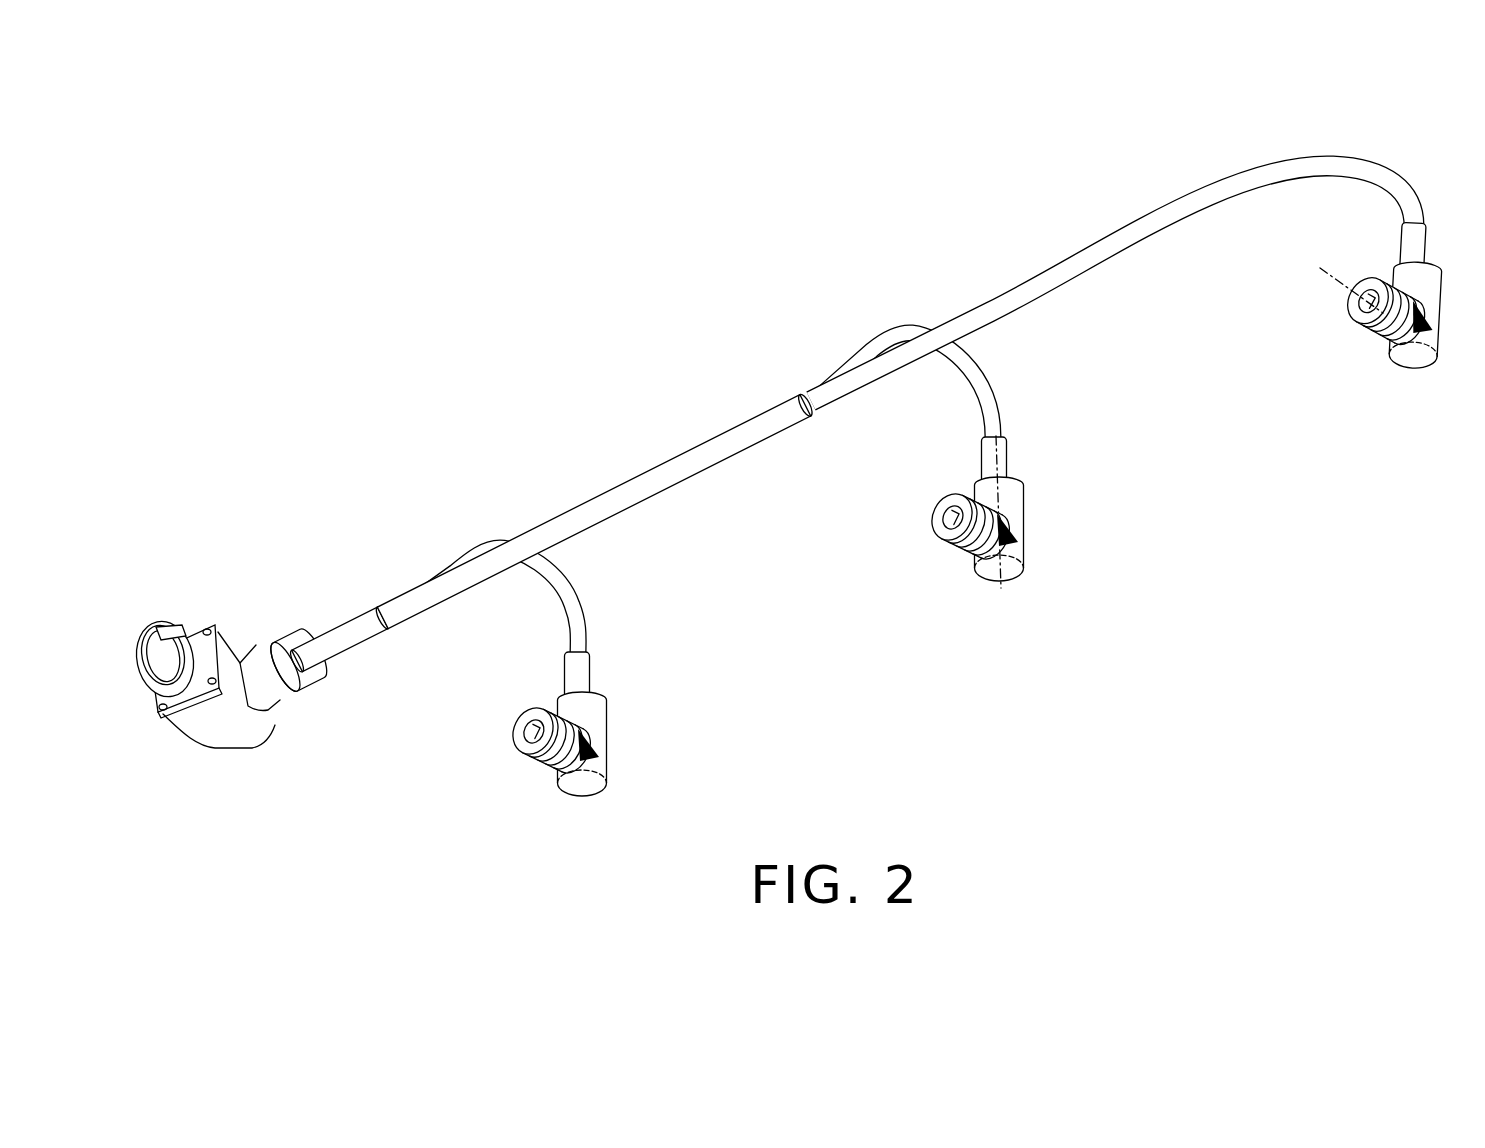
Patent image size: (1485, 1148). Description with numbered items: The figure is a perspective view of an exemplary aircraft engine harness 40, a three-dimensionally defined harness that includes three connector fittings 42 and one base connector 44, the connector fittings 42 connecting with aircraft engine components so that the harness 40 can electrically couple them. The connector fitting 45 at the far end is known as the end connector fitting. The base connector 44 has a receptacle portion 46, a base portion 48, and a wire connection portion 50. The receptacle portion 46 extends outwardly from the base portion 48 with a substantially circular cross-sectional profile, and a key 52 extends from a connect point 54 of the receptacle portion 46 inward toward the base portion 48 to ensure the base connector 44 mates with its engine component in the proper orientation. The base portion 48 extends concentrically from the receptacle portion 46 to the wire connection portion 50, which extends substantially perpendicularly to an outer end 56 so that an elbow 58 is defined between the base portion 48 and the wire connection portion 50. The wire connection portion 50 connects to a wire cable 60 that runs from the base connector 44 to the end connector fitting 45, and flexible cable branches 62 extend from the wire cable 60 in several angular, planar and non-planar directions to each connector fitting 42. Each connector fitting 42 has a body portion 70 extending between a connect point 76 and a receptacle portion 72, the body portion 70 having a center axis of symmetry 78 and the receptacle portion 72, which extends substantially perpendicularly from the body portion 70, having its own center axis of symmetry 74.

The aircraft engine harness 40 is at (450, 306).
The connector fitting 42 is at (587, 786).
The base connector 44 is at (283, 692).
The end connector fitting 45 is at (1393, 266).
The receptacle portion 46 is at (175, 686).
The base portion 48 is at (217, 737).
The wire connection portion 50 is at (258, 657).
The key 52 is at (161, 637).
The connect point 54 is at (188, 626).
The outer end 56 is at (322, 633).
The elbow 58 is at (253, 745).
The wire cable 60 is at (677, 463).
The flexible cable branch 62 is at (572, 608).
The body portion 70 is at (590, 723).
The receptacle portion 72 is at (530, 753).
The center axis of symmetry 74 is at (1300, 293).
The connect point 76 is at (1002, 440).
The center axis of symmetry 78 is at (1001, 586).